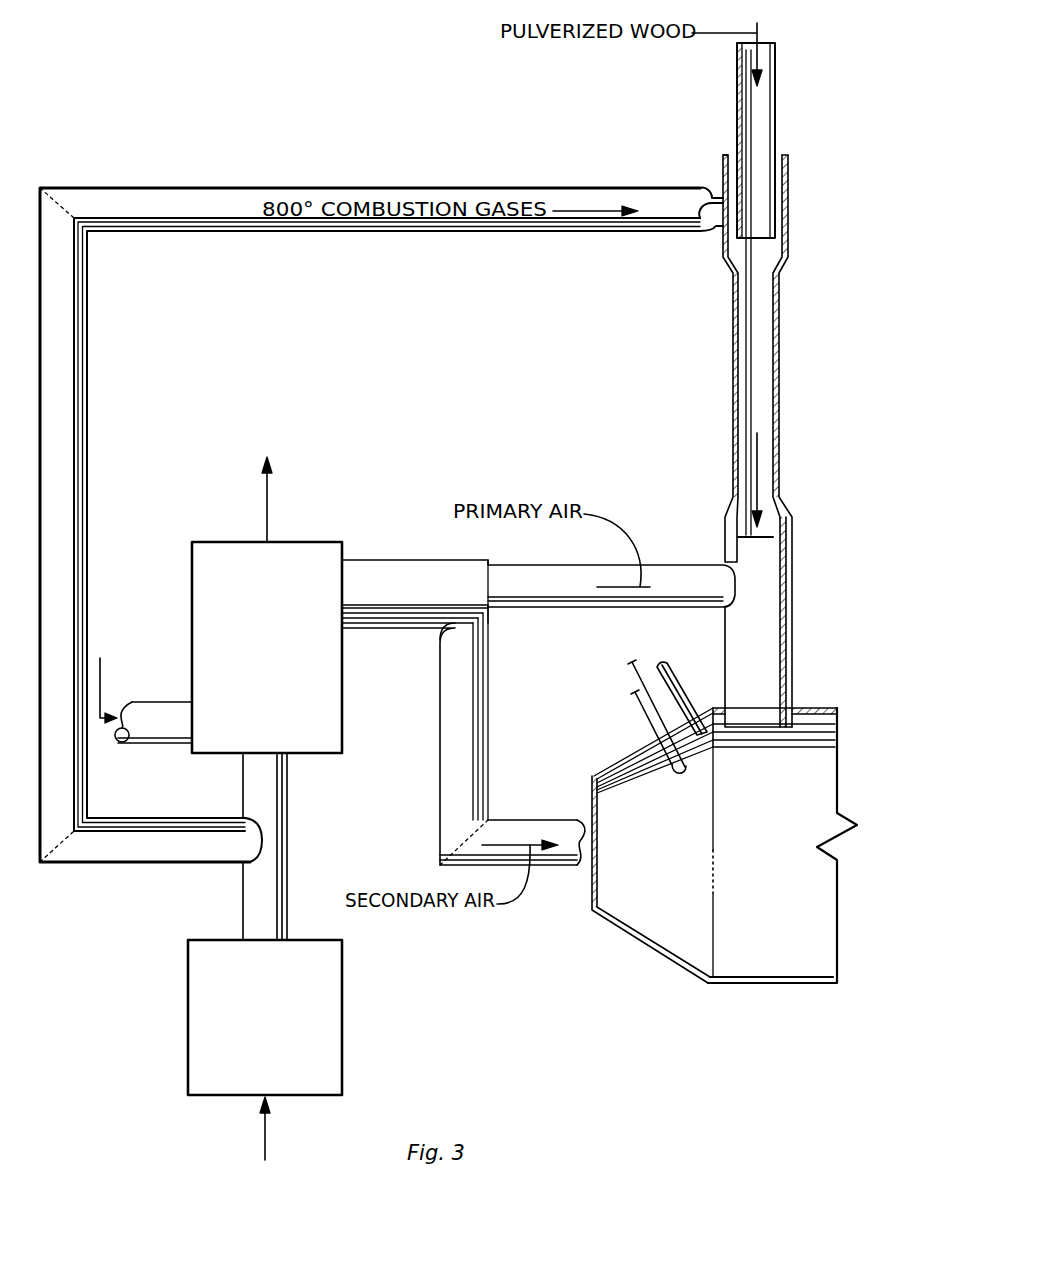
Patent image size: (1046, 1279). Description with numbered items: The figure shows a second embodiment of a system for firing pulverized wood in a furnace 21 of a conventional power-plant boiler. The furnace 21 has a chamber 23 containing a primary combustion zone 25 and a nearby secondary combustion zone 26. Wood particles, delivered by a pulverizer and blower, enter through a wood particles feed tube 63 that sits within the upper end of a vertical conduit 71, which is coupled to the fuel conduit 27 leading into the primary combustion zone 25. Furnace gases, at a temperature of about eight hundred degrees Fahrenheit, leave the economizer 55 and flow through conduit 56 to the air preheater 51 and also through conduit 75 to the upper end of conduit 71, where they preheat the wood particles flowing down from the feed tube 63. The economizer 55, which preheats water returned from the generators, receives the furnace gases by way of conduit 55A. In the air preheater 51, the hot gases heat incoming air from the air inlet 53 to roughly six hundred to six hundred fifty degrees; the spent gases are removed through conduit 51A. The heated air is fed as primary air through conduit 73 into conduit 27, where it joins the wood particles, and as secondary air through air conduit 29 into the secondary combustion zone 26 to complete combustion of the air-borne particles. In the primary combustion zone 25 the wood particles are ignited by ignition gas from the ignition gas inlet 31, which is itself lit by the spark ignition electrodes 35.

The furnace 21 is at (698, 857).
The chamber 23 is at (681, 967).
The primary combustion zone 25 is at (765, 752).
The secondary combustion zone 26 is at (640, 865).
The fuel conduit 27 is at (793, 575).
The air conduit 29 is at (530, 820).
The ignition gas inlet 31 is at (682, 687).
The spark ignition electrodes 35 is at (650, 720).
The air preheater 51 is at (218, 542).
The conduit 51A is at (270, 503).
The air inlet 53 is at (128, 701).
The economizer 55 is at (342, 1003).
The conduit 55A is at (265, 1140).
The conduit 56 is at (242, 906).
The wood particles feed tube 63 is at (737, 100).
The conduit 71 is at (733, 349).
The conduit 73 is at (697, 565).
The conduit 75 is at (88, 313).